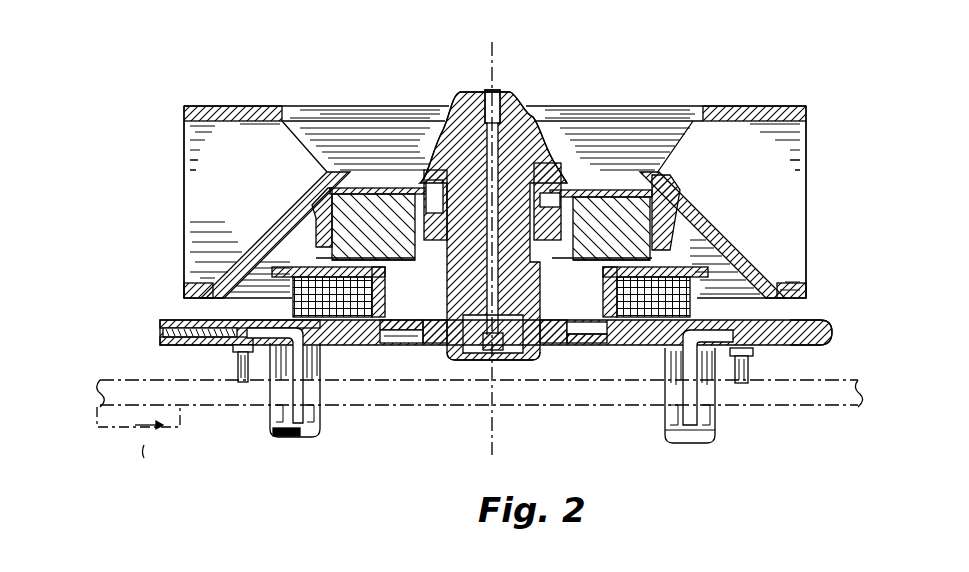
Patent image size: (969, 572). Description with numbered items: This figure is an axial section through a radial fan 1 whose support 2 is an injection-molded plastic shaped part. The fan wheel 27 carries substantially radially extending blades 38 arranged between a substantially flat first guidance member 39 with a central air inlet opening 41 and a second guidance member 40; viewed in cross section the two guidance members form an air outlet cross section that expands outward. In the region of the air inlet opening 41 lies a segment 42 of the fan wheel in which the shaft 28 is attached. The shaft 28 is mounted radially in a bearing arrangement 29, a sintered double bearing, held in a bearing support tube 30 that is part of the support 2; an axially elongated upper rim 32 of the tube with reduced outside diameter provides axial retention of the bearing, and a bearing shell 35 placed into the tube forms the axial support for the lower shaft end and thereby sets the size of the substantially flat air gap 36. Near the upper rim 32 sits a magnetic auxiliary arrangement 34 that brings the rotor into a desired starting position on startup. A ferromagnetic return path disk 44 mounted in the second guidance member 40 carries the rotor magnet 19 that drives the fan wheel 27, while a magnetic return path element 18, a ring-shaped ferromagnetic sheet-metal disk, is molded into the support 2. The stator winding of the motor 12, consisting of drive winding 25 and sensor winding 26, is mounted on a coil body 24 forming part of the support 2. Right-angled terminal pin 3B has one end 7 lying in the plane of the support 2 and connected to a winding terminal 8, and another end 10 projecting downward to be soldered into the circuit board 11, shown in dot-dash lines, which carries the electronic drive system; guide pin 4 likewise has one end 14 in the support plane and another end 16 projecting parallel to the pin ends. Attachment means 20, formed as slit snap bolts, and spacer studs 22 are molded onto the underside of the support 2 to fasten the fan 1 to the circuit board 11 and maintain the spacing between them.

The radial fan 1 is at (773, 92).
The support 2 is at (833, 339).
The terminal pin 3B is at (294, 380).
The guide pin 4 is at (685, 376).
The one end of the terminal pins 7 is at (167, 318).
The winding terminals 8 is at (215, 346).
The other ends of the terminal pins 10 is at (290, 437).
The circuit board 11 is at (102, 380).
The motor 12 is at (735, 250).
The one end of the guide pin 14 is at (810, 320).
The other end of the guide pin 16 is at (667, 427).
The magnetic return path element 18 is at (583, 345).
The rotor magnet 19 is at (662, 207).
The attachment means 20 is at (318, 400).
The spacer studs 22 is at (240, 380).
The coil body 24 is at (378, 343).
The drive winding 25 is at (620, 344).
The sensor winding 26 is at (655, 327).
The fan wheel 27 is at (648, 130).
The shaft 28 is at (511, 91).
The bearing arrangement 29 is at (453, 272).
The bearing support tube 30 is at (457, 352).
The upper rim 32 is at (555, 243).
The magnetic auxiliary arrangement 34 is at (402, 190).
The bearing shell 35 is at (490, 358).
The air gap 36 is at (340, 258).
The blades 38 is at (250, 196).
The first guidance member 39 is at (232, 114).
The second guidance member 40 is at (245, 252).
The air inlet opening 41 is at (343, 111).
The segment 42 is at (532, 100).
The ferromagnetic return path disk 44 is at (582, 190).